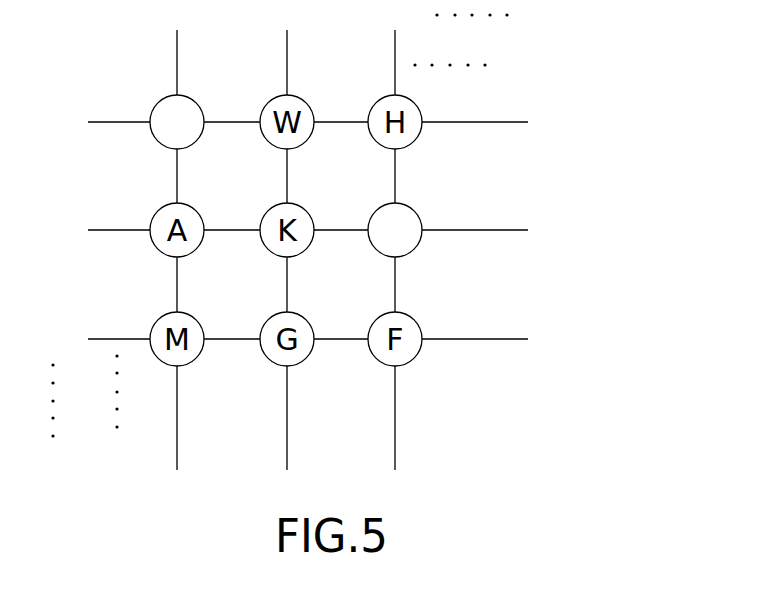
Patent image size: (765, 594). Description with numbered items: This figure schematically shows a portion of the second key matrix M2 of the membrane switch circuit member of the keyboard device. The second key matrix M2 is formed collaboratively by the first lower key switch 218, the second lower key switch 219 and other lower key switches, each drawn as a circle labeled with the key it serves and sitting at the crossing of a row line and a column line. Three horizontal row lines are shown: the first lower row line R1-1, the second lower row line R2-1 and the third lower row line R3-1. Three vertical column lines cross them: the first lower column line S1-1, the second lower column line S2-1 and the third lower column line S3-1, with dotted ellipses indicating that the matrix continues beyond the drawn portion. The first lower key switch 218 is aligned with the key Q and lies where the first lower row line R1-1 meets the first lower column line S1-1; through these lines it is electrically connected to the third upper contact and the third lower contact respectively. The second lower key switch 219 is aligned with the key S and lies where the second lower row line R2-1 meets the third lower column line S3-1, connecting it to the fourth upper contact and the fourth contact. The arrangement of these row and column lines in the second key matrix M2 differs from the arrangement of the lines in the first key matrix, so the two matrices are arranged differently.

The first lower key switch 218 is at (167, 103).
The second lower key switch 219 is at (403, 212).
The second key matrix M2 is at (572, 83).
The first lower column line S1-1 is at (175, 235).
The second lower column line S2-1 is at (285, 235).
The third lower column line S3-1 is at (394, 235).
The first lower row line R1-1 is at (276, 123).
The second lower row line R2-1 is at (276, 233).
The third lower row line R3-1 is at (276, 341).